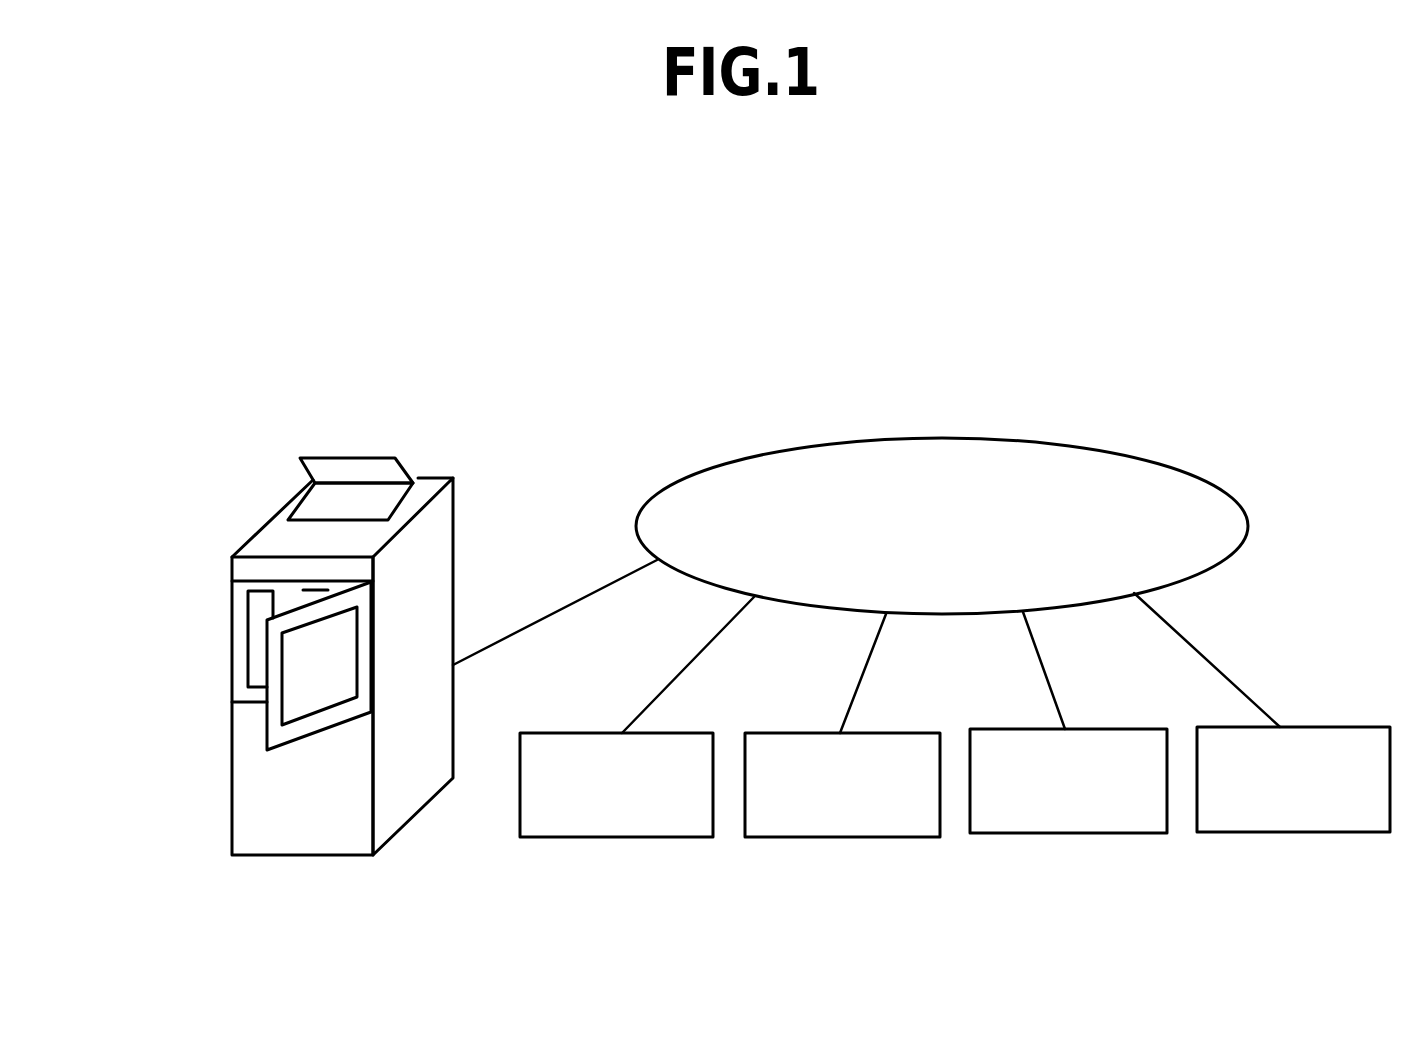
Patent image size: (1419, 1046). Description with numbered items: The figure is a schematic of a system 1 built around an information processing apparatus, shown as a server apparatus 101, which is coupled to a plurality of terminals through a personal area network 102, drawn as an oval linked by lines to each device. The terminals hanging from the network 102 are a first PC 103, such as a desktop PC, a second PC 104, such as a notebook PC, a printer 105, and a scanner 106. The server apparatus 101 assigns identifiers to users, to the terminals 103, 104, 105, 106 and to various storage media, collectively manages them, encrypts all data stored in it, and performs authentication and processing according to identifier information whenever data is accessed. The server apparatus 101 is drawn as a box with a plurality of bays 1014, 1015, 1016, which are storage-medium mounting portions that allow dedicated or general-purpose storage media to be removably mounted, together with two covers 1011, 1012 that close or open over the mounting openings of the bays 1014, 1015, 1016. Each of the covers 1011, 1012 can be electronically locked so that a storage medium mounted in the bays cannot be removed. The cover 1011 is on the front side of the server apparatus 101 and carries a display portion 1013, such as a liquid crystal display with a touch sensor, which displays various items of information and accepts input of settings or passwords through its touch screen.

The system 1 is at (1085, 411).
The server apparatus 101 is at (300, 855).
The cover 1011 is at (267, 735).
The cover 1012 is at (348, 456).
The display portion 1013 is at (298, 666).
The bay 1014 is at (253, 609).
The bay 1015 is at (300, 593).
The bay 1016 is at (325, 503).
The personal area network 102 is at (947, 436).
The first PC 103 is at (618, 837).
The second PC 104 is at (848, 837).
The printer 105 is at (1067, 833).
The scanner 106 is at (1295, 832).